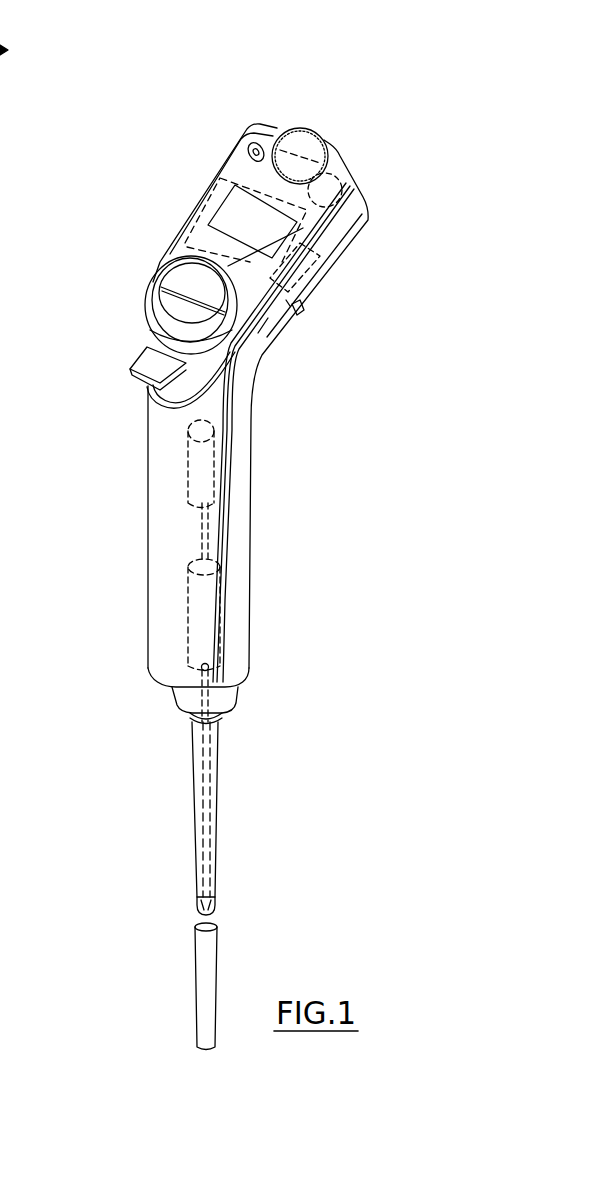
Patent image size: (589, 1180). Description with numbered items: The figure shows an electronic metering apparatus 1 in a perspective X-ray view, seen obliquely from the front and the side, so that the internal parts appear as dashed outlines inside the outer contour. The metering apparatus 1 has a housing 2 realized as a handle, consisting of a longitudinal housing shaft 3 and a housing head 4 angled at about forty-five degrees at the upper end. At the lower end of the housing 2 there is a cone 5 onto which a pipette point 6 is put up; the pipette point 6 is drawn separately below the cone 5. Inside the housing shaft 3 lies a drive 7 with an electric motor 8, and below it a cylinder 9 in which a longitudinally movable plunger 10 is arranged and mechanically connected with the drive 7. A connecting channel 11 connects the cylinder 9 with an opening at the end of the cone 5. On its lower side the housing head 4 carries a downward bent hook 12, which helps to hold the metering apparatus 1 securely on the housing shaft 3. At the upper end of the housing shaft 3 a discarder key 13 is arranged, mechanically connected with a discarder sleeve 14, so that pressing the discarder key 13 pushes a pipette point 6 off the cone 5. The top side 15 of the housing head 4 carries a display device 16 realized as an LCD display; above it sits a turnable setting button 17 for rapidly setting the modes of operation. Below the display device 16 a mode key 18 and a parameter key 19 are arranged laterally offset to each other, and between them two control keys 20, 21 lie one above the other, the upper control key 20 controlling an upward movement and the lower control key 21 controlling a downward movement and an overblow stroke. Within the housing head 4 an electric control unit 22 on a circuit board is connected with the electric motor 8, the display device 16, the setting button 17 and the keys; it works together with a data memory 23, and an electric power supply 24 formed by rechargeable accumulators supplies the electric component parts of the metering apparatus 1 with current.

The metering apparatus 1 is at (98, 488).
The housing 2 is at (154, 437).
The housing shaft 3 is at (243, 508).
The housing head 4 is at (326, 270).
The cone 5 is at (196, 905).
The pipette point 6 is at (203, 955).
The drive 7 is at (205, 492).
The electric motor 8 is at (207, 456).
The cylinder 9 is at (222, 633).
The plunger 10 is at (217, 595).
The connecting channel 11 is at (208, 735).
The hook 12 is at (305, 312).
The discarder key 13 is at (128, 367).
The discarder sleeve 14 is at (207, 773).
The top side 15 is at (240, 217).
The display device 16 is at (200, 193).
The setting button 17 is at (300, 135).
The mode key 18 is at (158, 305).
The parameter key 19 is at (262, 327).
The upper control key 20 is at (167, 268).
The lower control key 21 is at (143, 318).
The electric control unit 22 is at (320, 238).
The data memory 23 is at (300, 315).
The electric power supply 24 is at (327, 175).